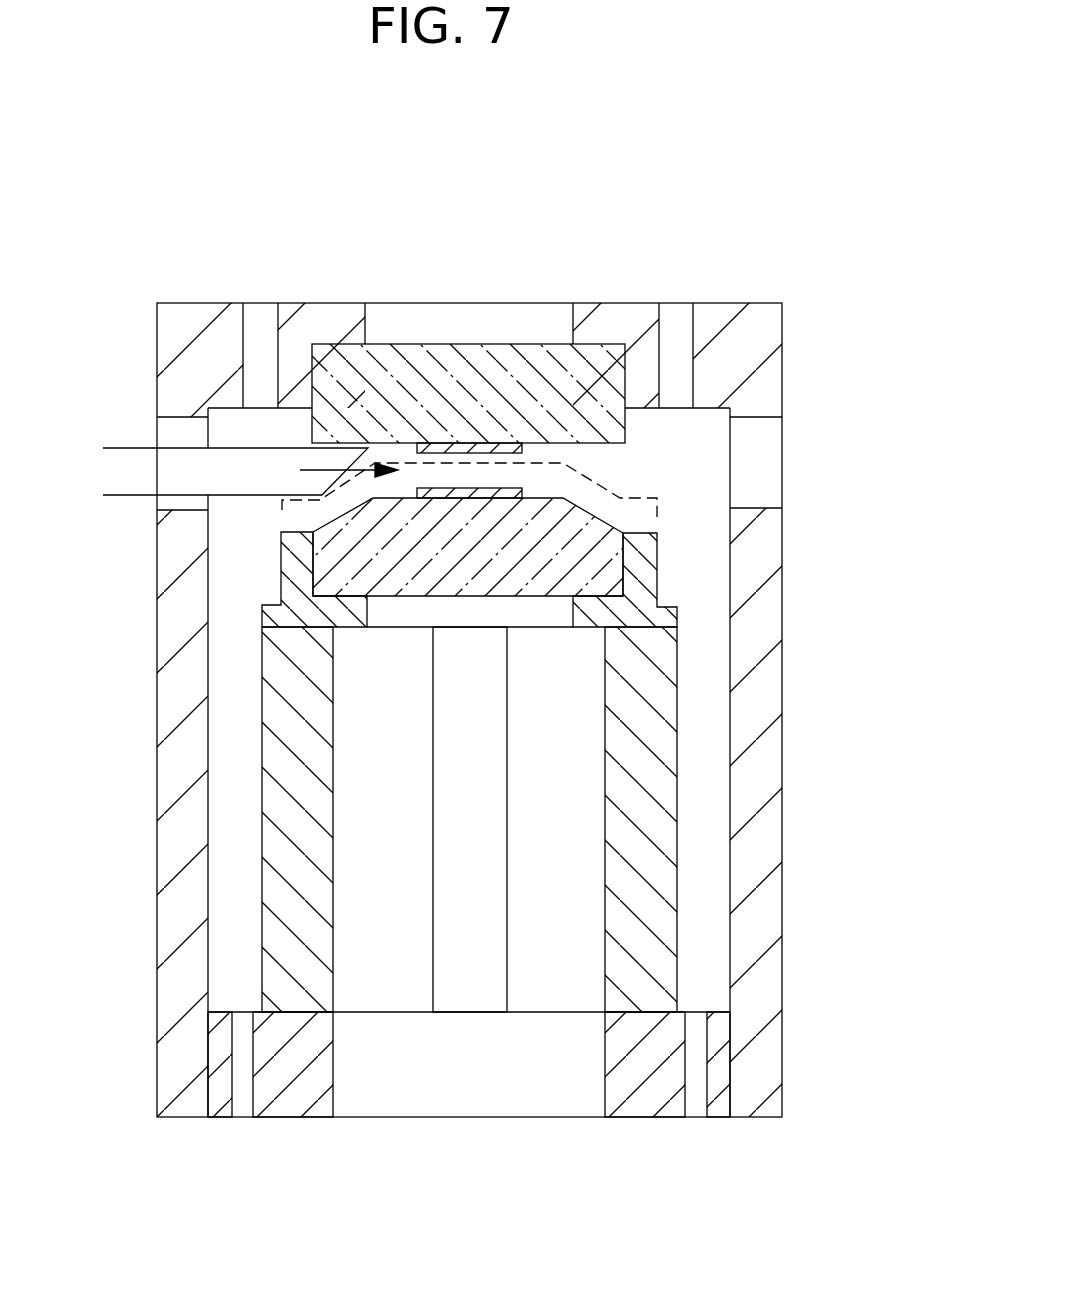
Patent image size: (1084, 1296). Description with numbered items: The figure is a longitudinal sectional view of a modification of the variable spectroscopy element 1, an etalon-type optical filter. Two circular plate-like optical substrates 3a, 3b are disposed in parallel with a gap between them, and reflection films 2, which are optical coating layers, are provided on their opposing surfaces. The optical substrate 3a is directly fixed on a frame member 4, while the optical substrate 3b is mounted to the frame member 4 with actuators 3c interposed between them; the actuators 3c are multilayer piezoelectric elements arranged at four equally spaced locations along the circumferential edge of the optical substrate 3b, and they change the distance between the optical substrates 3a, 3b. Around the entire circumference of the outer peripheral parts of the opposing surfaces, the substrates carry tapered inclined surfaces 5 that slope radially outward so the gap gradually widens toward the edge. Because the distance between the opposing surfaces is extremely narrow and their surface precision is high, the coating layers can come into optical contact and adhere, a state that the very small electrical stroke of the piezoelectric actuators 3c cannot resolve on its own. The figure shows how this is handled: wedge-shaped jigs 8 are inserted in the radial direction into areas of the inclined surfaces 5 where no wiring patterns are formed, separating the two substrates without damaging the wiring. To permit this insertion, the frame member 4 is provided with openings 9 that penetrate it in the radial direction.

The variable spectroscopy element 1 is at (817, 163).
The reflection films 2 is at (485, 443).
The optical substrate 3a is at (398, 356).
The optical substrate 3b is at (427, 578).
The actuators 3c is at (495, 777).
The frame member 4 is at (643, 1103).
The inclined surfaces 5 is at (600, 522).
The wedge-shaped jigs 8 is at (242, 497).
The openings 9 is at (178, 418).